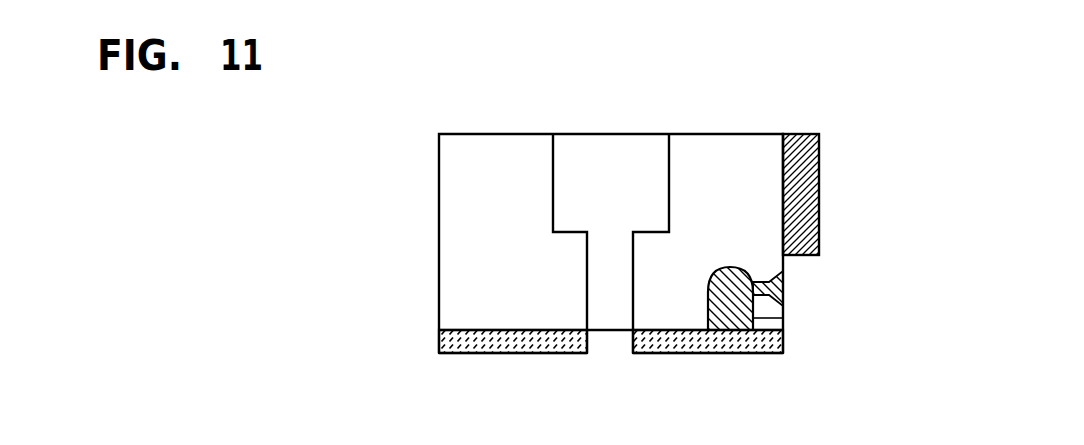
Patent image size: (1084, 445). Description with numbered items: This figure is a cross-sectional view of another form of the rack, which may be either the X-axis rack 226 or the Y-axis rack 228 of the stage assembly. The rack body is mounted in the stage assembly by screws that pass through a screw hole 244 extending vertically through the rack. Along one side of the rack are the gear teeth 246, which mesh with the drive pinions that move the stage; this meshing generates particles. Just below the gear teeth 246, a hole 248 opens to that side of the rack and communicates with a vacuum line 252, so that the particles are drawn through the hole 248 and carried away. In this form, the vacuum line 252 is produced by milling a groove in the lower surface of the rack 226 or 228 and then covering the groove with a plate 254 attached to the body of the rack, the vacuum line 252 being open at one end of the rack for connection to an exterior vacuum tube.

The X-axis rack 226 is at (467, 152).
The Y-axis rack 228 is at (466, 150).
The screw hole 244 is at (617, 145).
The gear teeth 246 is at (808, 222).
The hole 248 is at (783, 293).
The vacuum line 252 is at (783, 318).
The plate 254 is at (783, 348).